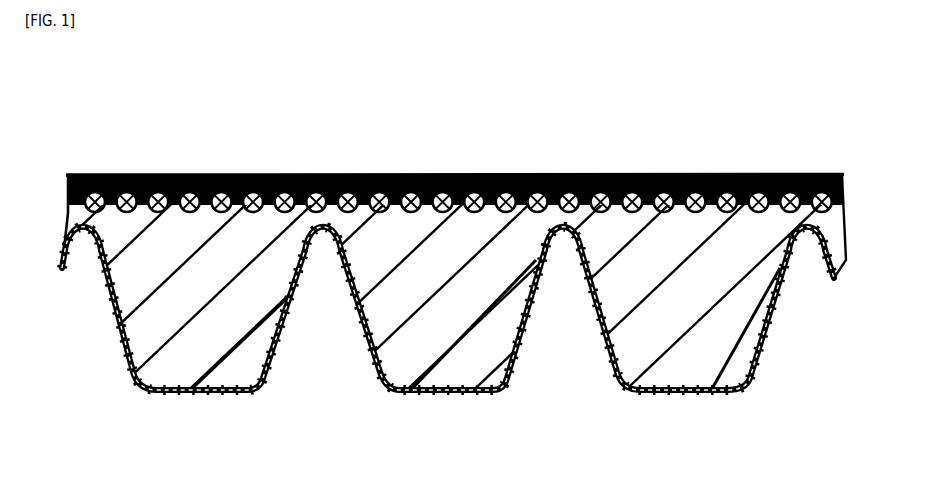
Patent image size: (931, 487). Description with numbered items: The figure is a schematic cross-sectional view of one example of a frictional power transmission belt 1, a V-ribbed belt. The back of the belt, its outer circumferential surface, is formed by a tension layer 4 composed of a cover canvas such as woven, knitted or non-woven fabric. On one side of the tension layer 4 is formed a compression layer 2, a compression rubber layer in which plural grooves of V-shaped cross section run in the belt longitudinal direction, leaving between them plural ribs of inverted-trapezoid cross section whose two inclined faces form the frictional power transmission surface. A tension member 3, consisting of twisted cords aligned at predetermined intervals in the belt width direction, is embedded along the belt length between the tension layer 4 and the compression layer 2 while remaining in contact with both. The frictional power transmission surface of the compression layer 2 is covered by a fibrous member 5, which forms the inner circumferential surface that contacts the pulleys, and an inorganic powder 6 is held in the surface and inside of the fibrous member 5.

The frictional power transmission belt 1 is at (354, 148).
The compression layer 2 is at (635, 335).
The tension member 3 is at (792, 174).
The tension layer 4 is at (511, 176).
The fibrous member 5 is at (124, 346).
The inorganic powder 6 is at (257, 397).